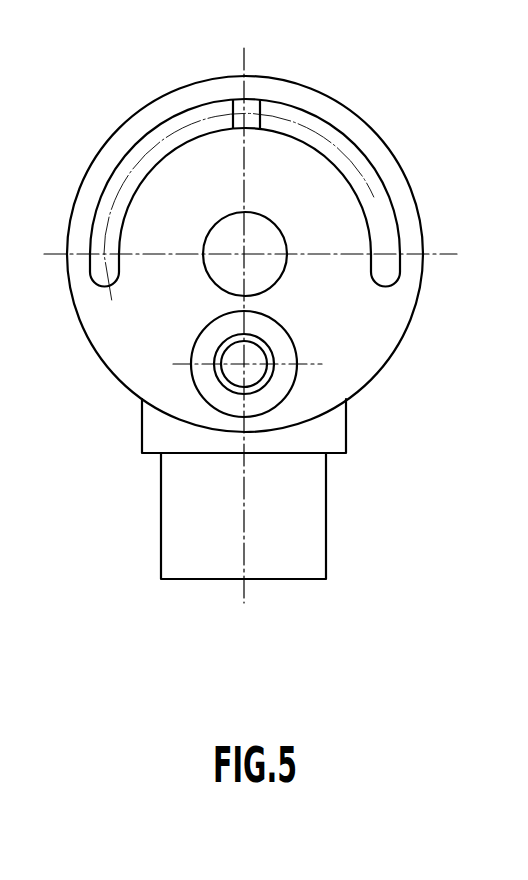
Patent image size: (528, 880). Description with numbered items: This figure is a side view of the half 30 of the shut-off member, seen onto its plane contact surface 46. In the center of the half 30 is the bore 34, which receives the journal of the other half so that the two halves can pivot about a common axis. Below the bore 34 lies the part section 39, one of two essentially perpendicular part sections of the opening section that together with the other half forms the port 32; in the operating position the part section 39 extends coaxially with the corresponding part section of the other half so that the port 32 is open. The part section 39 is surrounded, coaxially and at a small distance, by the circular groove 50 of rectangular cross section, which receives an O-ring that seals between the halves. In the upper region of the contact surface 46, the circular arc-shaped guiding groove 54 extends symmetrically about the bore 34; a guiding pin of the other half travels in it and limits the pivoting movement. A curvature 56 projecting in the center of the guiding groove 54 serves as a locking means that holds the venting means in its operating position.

The half 30 is at (150, 96).
The port 32 is at (440, 424).
The bore 34 is at (262, 242).
The part section 39 is at (252, 372).
The contact surface 46 is at (380, 322).
The groove 50 is at (280, 347).
The guiding groove 54 is at (342, 145).
The curvature 56 is at (252, 105).